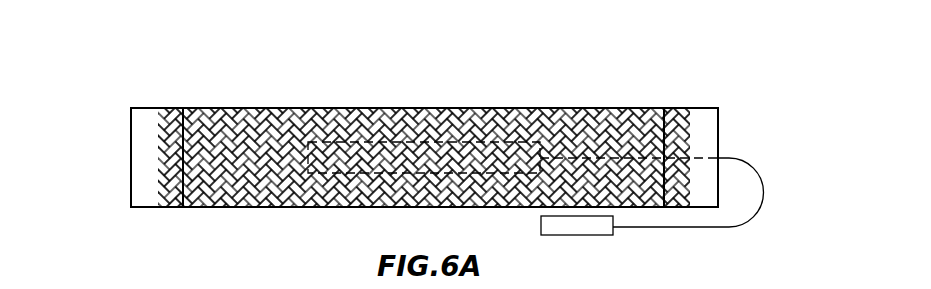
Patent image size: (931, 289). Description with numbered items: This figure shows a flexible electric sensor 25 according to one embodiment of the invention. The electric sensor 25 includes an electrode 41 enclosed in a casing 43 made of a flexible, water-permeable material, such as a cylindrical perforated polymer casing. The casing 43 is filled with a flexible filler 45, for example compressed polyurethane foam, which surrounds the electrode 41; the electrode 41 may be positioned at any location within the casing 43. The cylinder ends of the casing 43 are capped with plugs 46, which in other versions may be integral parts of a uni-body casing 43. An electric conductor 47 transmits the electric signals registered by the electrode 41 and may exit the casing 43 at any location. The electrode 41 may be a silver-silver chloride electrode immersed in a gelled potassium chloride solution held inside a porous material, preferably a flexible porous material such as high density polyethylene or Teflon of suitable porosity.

The electric sensor 25 is at (120, 87).
The electrode 41 is at (352, 129).
The casing 43 is at (603, 100).
The flexible filler 45 is at (239, 129).
The plugs 46 is at (111, 164).
The electric conductor 47 is at (776, 169).